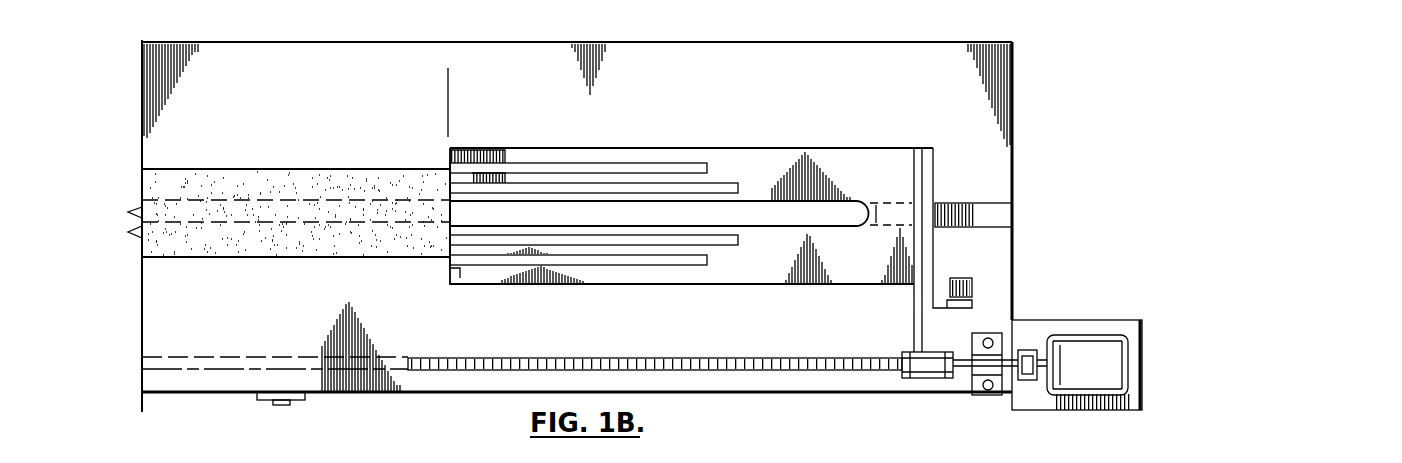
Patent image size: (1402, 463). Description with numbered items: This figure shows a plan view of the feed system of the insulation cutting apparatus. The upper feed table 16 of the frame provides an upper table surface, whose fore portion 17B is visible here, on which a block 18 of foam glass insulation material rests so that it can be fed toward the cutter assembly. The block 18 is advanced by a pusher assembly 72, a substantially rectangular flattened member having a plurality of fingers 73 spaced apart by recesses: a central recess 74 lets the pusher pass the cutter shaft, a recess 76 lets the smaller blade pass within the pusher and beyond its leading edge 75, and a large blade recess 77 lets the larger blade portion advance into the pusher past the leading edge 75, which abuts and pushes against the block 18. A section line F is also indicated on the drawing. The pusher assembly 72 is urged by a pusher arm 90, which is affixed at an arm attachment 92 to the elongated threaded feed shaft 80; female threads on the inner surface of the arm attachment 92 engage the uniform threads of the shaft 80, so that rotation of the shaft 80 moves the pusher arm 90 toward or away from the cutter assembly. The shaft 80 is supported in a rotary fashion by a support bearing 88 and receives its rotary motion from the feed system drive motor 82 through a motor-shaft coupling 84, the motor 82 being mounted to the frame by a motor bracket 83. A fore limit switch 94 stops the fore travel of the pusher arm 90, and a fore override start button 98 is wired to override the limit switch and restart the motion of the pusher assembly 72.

The feed table 16 is at (1013, 113).
The fore surface portion of table 17B is at (965, 93).
The block 18 is at (370, 243).
The section line F is at (448, 116).
The pusher assembly 72 is at (770, 160).
The fingers 73 is at (574, 200).
The central recess 74 is at (789, 217).
The leading edge 75 is at (947, 228).
The recess 76 is at (648, 249).
The large blade recess 77 is at (487, 158).
The threaded feed shaft 80 is at (836, 357).
The feed system drive motor 82 is at (1080, 410).
The motor bracket 83 is at (1142, 386).
The motor-shaft coupling 84 is at (1031, 382).
The support bearing 88 is at (987, 394).
The pusher arm 90 is at (933, 150).
The arm attachment 92 is at (922, 364).
The fore limit switch 94 is at (972, 289).
The fore override start button 98 is at (280, 404).